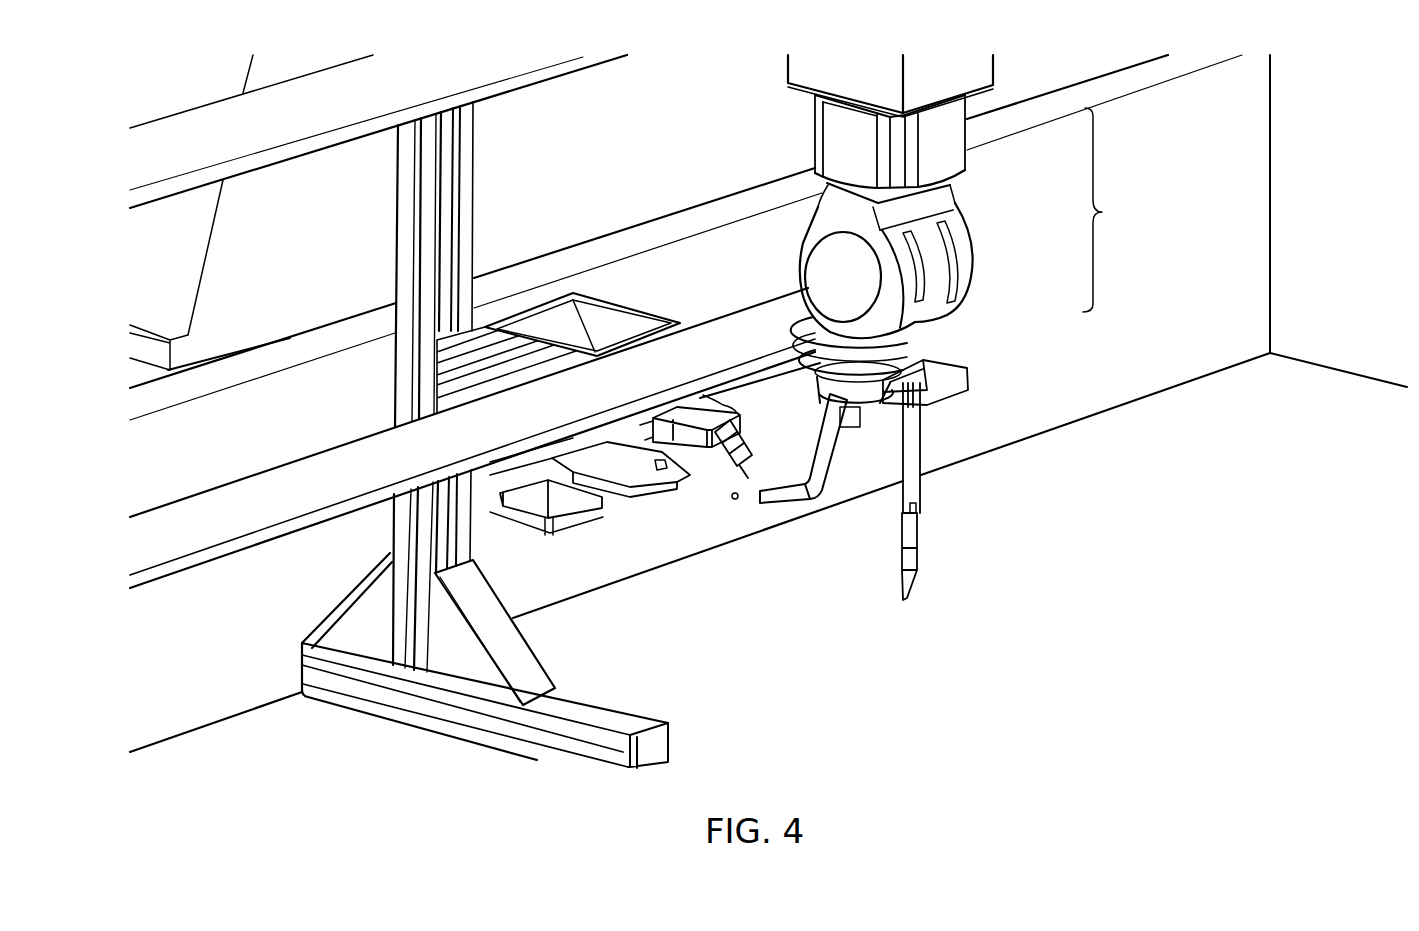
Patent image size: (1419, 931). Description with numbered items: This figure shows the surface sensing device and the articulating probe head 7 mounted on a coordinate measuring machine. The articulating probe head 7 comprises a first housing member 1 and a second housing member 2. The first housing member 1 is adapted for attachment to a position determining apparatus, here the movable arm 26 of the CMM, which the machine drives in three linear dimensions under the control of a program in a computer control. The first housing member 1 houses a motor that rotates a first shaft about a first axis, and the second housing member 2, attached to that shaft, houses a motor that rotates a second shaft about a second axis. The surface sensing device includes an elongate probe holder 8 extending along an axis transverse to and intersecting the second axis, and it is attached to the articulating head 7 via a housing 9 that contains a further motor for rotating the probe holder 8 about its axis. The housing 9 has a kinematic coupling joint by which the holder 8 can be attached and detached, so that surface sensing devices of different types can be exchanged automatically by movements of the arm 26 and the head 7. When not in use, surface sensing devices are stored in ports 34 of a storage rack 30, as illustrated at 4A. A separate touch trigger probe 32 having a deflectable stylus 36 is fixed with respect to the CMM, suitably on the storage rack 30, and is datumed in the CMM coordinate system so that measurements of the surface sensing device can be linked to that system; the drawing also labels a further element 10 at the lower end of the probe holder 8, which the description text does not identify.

The first housing member 1 is at (945, 153).
The second housing member 2 is at (972, 268).
The surface sensing device 4A is at (923, 450).
The articulating probe head 7 is at (1102, 212).
The probe holder 8 is at (838, 453).
The housing 9 is at (923, 353).
The nozzle 10 is at (763, 501).
The movable arm 26 is at (813, 78).
The storage rack 30 is at (323, 470).
The touch trigger probe 32 is at (747, 443).
The ports 34 is at (557, 525).
The deflectable stylus 36 is at (737, 478).